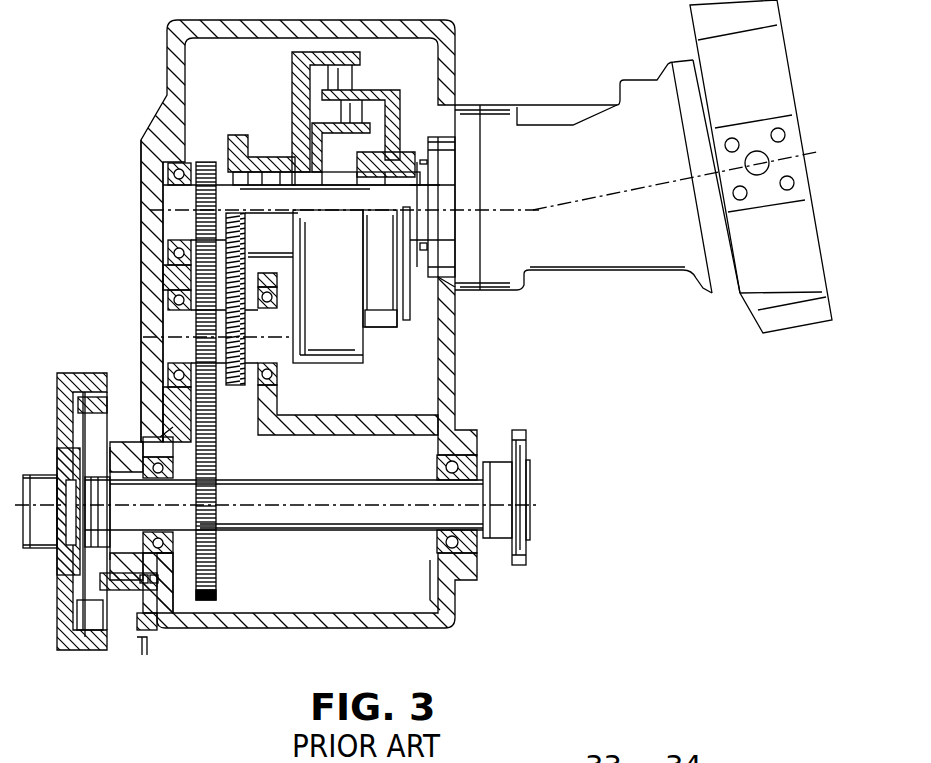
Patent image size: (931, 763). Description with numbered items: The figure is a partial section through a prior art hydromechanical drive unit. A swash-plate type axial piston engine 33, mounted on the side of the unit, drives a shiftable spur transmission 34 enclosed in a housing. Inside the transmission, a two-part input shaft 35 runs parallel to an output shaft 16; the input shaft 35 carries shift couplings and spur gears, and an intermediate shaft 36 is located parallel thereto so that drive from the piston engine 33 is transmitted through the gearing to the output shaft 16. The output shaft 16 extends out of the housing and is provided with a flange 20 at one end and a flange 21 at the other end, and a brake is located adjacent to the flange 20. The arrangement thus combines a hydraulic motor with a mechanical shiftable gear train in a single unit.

The output shaft 16 is at (313, 497).
The flange 20 is at (97, 512).
The flange 21 is at (497, 498).
The swash-plate type axial piston engine 33 is at (644, 157).
The shiftable spur transmission 34 is at (455, 50).
The two-part input shaft 35 is at (222, 192).
The intermediate shaft 36 is at (222, 353).